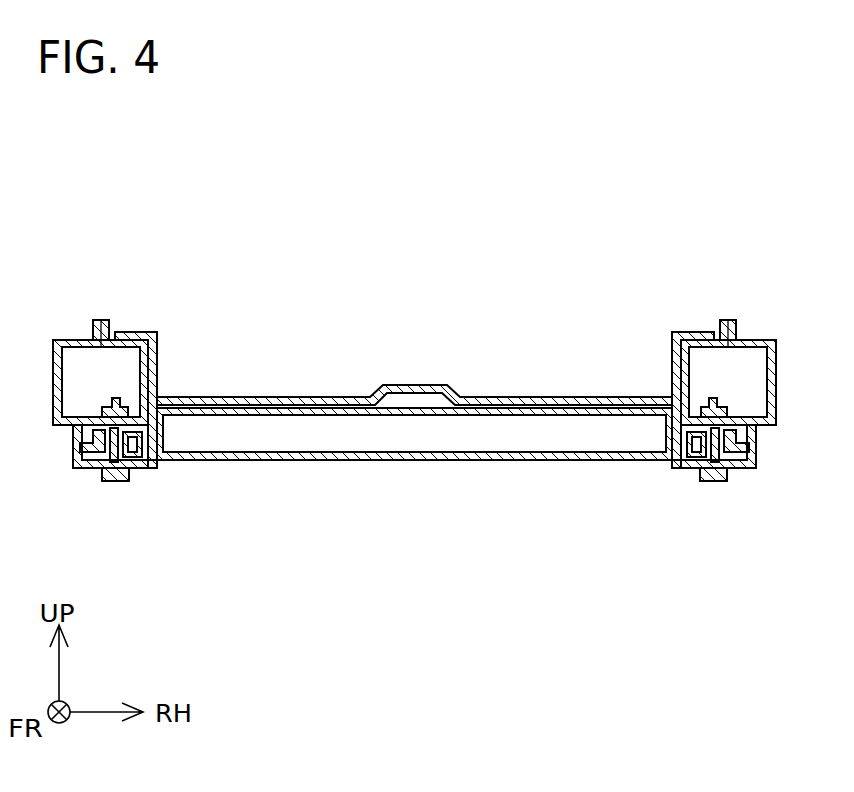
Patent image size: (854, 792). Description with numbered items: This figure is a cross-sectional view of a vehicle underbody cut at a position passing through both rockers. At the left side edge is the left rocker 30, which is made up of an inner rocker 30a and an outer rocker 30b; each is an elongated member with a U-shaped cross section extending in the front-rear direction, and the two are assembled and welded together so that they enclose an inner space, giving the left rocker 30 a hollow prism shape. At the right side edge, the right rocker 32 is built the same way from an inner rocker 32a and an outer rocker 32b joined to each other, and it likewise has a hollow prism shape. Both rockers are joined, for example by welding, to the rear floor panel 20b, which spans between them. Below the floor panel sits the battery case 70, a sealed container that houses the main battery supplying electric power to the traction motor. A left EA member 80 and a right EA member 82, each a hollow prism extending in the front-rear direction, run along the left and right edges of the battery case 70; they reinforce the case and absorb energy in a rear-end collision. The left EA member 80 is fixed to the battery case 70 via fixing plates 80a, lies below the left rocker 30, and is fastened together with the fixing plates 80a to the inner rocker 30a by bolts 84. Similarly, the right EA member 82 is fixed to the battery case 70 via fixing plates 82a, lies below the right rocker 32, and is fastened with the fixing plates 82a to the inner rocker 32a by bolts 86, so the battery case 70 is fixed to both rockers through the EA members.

The rear floor panel 20b is at (278, 397).
The left rocker 30 is at (152, 254).
The inner rocker 30a is at (118, 332).
The outer rocker 30b is at (82, 337).
The right rocker 32 is at (677, 254).
The inner rocker 32a is at (713, 332).
The outer rocker 32b is at (748, 337).
The battery case 70 is at (453, 460).
The left EA member 80 is at (132, 468).
The fixing plates 80a is at (150, 463).
The right EA member 82 is at (695, 470).
The fixing plates 82a is at (677, 468).
The bolts 84 is at (115, 481).
The bolts 86 is at (717, 481).